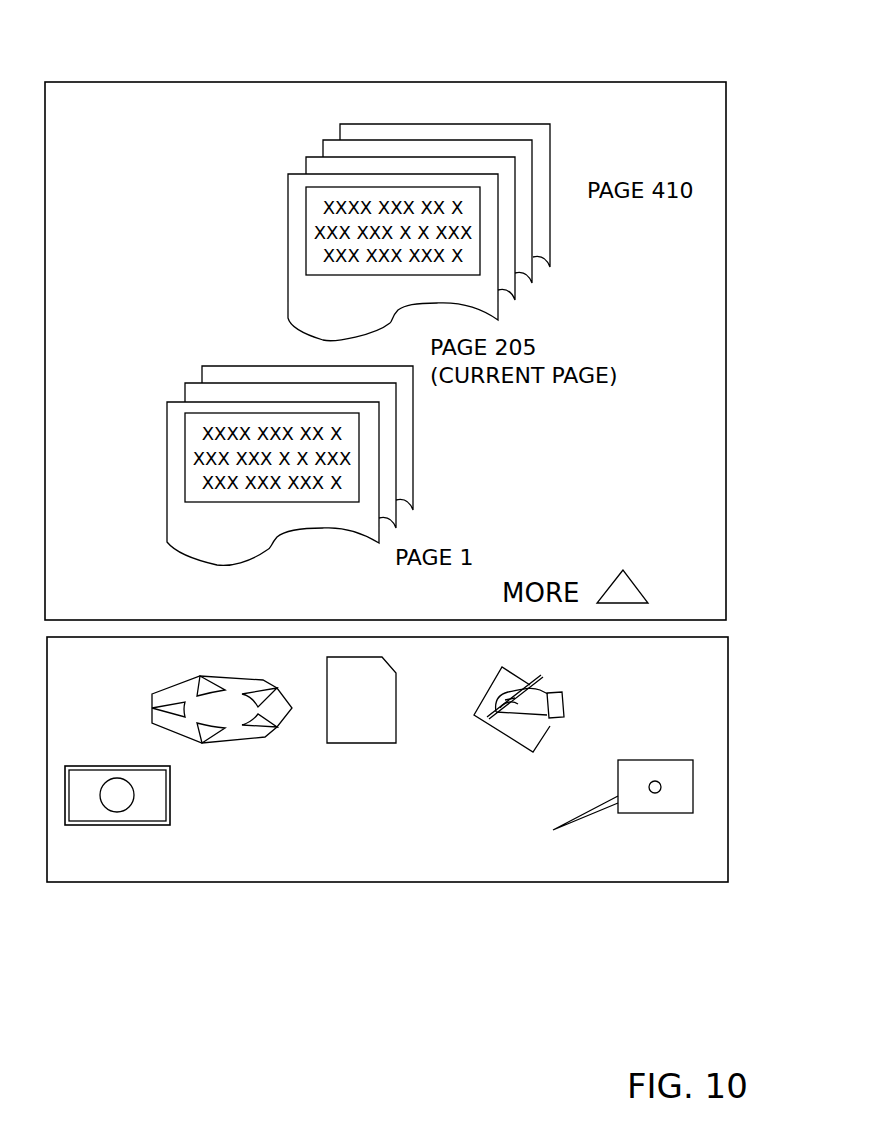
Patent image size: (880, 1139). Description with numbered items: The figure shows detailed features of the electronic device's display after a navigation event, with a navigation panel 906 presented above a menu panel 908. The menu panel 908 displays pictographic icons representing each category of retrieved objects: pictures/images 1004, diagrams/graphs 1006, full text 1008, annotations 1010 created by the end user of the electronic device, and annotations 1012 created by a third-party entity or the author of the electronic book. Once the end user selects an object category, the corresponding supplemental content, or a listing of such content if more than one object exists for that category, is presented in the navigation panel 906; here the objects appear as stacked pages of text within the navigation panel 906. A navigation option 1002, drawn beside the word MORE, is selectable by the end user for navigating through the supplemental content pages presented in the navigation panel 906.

The navigation panel 906 is at (552, 82).
The menu panel 908 is at (728, 722).
The navigation option 1002 is at (642, 588).
The pictures/images 1004 is at (170, 792).
The diagrams/graphs 1006 is at (202, 673).
The full text 1008 is at (362, 743).
The annotations created by the end user 1010 is at (556, 692).
The annotations created by a third-party entity or the author 1012 is at (625, 777).